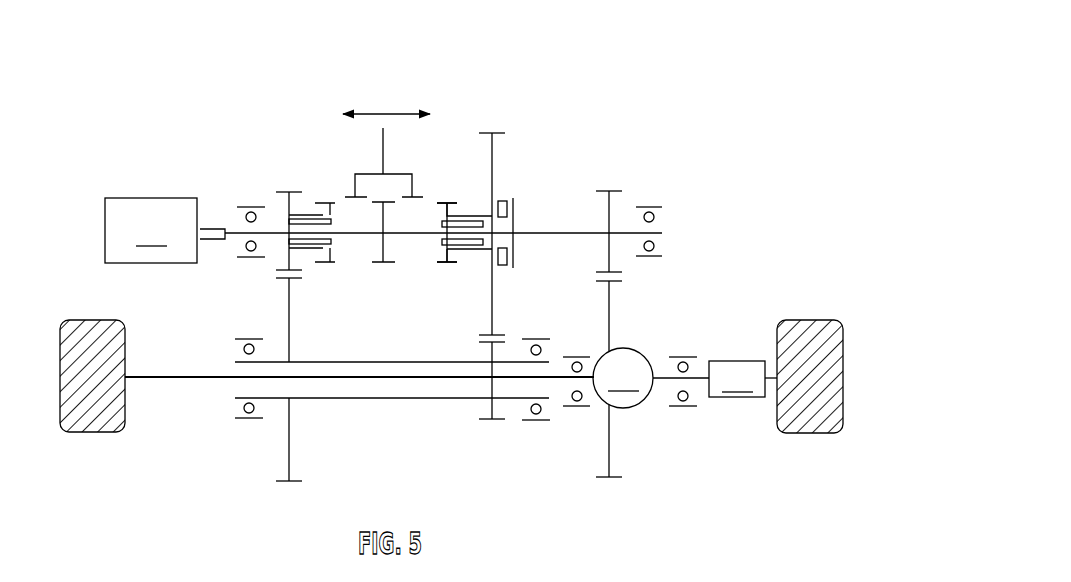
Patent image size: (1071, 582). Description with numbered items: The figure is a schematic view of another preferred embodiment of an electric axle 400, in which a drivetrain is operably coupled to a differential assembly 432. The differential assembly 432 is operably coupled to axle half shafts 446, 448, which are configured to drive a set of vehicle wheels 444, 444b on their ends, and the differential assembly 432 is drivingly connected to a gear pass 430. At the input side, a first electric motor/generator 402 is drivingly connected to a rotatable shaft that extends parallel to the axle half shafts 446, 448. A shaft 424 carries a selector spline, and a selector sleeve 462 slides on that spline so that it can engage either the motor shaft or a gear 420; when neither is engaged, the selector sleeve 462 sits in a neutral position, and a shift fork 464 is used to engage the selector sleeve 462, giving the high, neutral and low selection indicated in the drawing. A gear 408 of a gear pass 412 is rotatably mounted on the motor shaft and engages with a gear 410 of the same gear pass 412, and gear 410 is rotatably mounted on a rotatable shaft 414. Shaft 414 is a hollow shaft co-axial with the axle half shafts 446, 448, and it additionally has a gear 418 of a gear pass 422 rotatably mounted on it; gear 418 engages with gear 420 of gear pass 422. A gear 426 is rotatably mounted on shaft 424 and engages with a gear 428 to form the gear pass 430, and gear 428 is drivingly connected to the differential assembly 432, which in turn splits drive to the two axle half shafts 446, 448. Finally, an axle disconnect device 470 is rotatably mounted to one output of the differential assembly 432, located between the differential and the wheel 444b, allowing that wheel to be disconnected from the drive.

The electric axle 400 is at (657, 63).
The first electric motor/generator 402 is at (165, 230).
The gear 408 is at (292, 191).
The gear 410 is at (291, 482).
The gear pass 412 is at (252, 160).
The rotatable shaft 414 is at (385, 398).
The gear 418 is at (492, 419).
The gear 420 is at (491, 133).
The gear pass 422 is at (505, 123).
The shaft 424 is at (422, 237).
The gear 426 is at (615, 190).
The gear 428 is at (617, 479).
The gear pass 430 is at (608, 153).
The differential assembly 432 is at (630, 378).
The vehicle wheel 444 is at (92, 396).
The vehicle wheel 444b is at (790, 319).
The axle half shaft 446 is at (183, 377).
The axle half shaft 448 is at (774, 402).
The selector sleeve 462 is at (413, 170).
The shift fork 464 is at (382, 158).
The axle disconnect device 470 is at (737, 379).